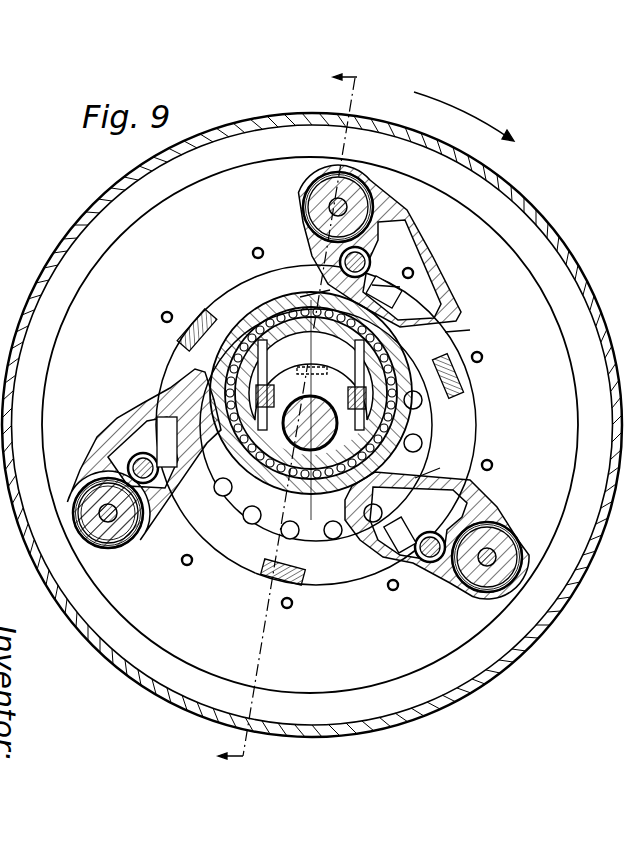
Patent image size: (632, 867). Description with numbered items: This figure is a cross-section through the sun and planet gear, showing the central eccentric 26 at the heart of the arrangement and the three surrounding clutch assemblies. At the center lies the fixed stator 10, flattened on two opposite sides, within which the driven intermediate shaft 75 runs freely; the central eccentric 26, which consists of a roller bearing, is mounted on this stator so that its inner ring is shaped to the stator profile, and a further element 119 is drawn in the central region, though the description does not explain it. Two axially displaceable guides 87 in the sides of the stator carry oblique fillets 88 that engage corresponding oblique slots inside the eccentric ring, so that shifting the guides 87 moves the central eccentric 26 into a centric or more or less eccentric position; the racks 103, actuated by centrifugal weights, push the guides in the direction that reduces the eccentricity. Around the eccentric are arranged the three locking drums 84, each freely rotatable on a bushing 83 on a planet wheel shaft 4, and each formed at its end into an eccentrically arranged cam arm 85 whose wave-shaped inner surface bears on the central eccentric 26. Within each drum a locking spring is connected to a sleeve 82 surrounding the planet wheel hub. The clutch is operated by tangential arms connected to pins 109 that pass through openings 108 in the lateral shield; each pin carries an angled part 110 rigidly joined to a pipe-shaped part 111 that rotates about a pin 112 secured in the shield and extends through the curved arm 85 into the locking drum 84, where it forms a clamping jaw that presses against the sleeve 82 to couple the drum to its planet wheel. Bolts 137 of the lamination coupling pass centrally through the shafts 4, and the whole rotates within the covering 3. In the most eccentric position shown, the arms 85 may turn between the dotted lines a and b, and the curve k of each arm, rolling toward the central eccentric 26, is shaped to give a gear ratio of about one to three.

The covering 3 is at (537, 218).
The shaft 4 is at (303, 207).
The stator 10 is at (313, 403).
The central eccentric 26 is at (268, 320).
The intermediate shaft 75 is at (288, 472).
The sleeve 82 is at (105, 550).
The bushing 83 is at (376, 184).
The locking drum 84 is at (303, 192).
The arm 85 is at (428, 242).
The guides 87 is at (311, 385).
The oblique fillets 88 is at (266, 378).
The racks 103 is at (200, 320).
The openings 108 is at (440, 290).
The pins 109 is at (248, 560).
The part 110 is at (190, 515).
The pipe-shaped part 111 is at (370, 263).
The pin 112 is at (368, 255).
The key 119 is at (313, 366).
The bolts 137 is at (308, 222).
The dotted line a is at (415, 378).
The dotted line b is at (466, 323).
The curve k is at (356, 422).